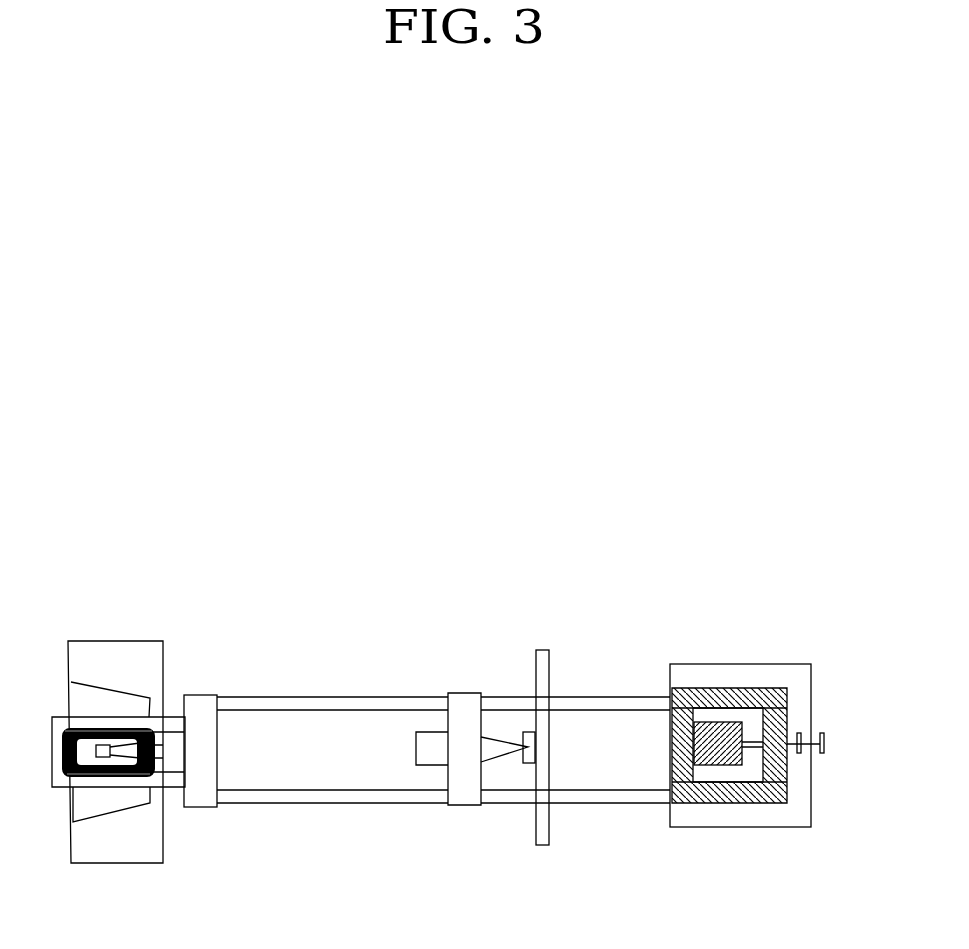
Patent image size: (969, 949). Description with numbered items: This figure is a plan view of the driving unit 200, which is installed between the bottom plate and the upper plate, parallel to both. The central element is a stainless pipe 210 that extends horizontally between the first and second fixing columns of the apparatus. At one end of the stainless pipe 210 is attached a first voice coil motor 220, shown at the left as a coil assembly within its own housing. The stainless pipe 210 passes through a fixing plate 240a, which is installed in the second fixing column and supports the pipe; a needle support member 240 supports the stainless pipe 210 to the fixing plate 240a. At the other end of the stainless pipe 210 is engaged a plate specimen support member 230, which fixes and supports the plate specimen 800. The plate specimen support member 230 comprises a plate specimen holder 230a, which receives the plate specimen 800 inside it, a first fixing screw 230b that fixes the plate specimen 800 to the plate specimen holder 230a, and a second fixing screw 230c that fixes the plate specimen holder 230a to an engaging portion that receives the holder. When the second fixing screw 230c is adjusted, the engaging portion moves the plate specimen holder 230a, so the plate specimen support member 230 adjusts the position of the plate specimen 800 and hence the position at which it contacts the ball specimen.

The driving unit 200 is at (217, 448).
The stainless pipe 210 is at (287, 702).
The first voice coil motor 220 is at (125, 608).
The plate specimen support member 230 is at (659, 661).
The plate specimen holder 230a is at (724, 688).
The first fixing screw 230b is at (794, 732).
The second fixing screw 230c is at (823, 731).
The needle support member 240 is at (506, 657).
The fixing plate 240a is at (550, 840).
The plate specimen 800 is at (718, 765).